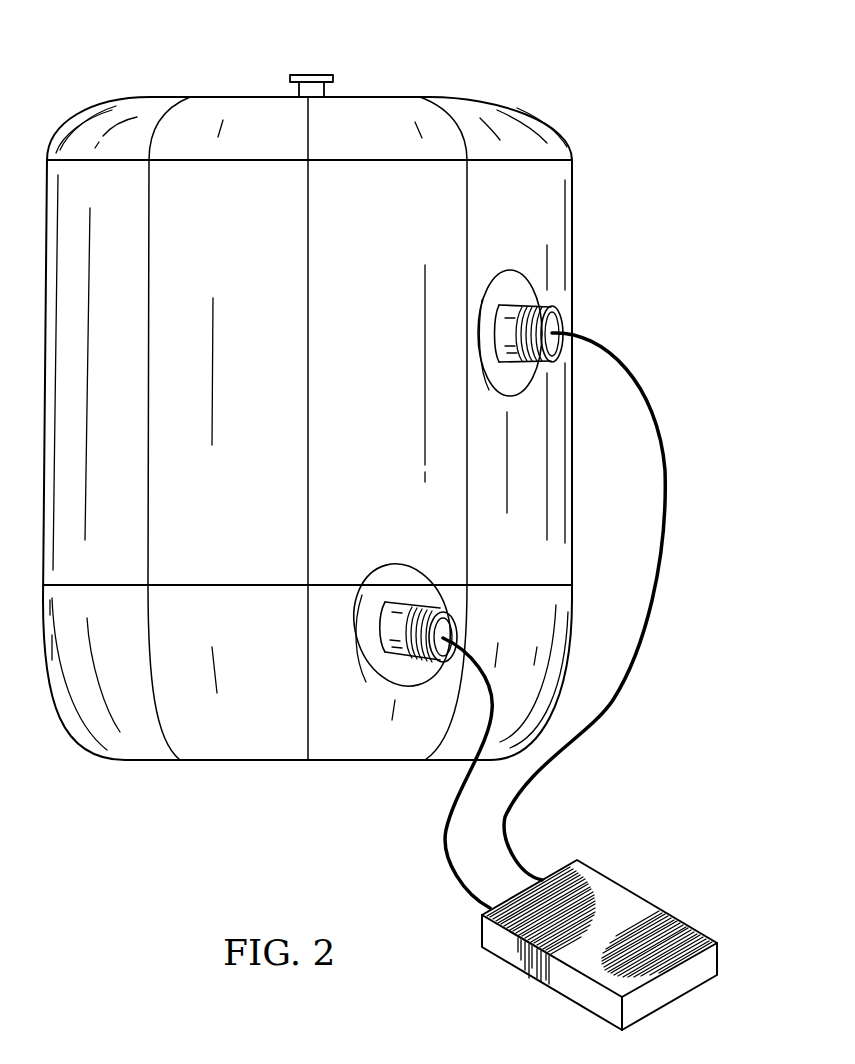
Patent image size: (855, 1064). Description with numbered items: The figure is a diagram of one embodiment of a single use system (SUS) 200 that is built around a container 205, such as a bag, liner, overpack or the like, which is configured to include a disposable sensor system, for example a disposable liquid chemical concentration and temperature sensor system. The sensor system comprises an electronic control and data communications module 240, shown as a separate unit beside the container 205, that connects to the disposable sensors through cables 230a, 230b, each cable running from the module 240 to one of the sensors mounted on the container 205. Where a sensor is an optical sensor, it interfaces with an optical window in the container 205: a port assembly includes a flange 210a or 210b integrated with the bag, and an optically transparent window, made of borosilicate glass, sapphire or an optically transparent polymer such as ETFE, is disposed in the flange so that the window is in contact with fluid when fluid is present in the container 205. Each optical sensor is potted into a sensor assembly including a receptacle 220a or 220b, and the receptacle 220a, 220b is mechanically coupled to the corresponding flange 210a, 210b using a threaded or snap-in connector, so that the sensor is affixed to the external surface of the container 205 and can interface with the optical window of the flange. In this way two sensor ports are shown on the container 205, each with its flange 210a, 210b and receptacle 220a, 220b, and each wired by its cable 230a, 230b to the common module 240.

The single use system (SUS) 200 is at (128, 59).
The container 205 is at (253, 97).
The flange 210a is at (519, 288).
The flange 210b is at (404, 578).
The receptacle 220a is at (566, 322).
The receptacle 220b is at (462, 636).
The cable 230a is at (667, 503).
The cable 230b is at (441, 836).
The electronic control and data communications module 240 is at (648, 898).